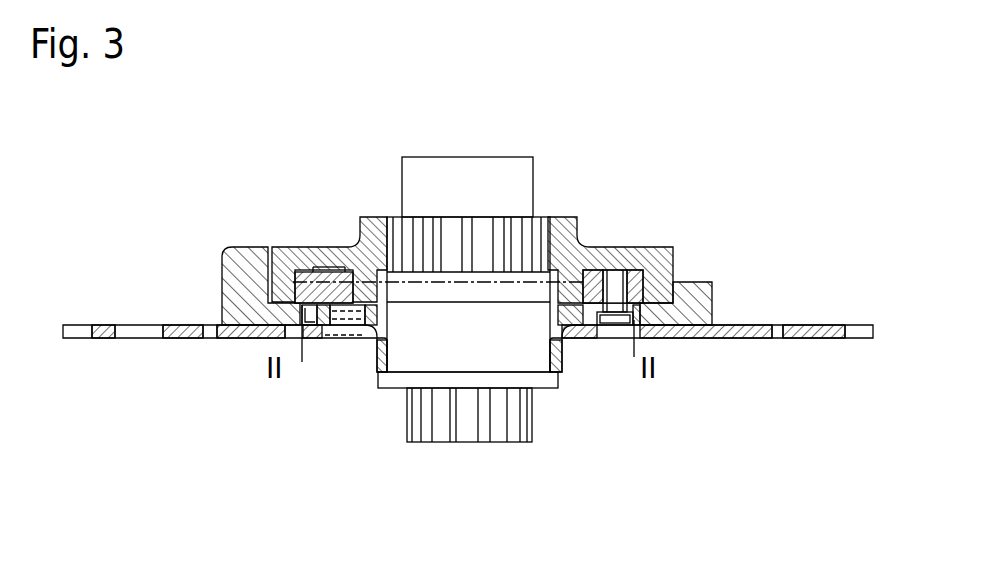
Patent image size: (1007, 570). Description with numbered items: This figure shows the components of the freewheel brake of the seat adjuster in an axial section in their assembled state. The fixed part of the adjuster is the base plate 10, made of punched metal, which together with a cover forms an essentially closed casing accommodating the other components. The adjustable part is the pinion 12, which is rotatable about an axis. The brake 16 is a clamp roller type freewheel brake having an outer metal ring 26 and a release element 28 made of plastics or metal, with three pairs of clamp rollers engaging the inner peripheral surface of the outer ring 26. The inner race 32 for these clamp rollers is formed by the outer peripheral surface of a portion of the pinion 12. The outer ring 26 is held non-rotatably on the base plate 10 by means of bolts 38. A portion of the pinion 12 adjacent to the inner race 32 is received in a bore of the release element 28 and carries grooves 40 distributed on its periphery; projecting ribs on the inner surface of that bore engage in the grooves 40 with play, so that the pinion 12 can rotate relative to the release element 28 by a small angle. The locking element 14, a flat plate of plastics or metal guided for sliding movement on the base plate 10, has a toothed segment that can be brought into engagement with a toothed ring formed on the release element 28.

The base plate 10 is at (173, 348).
The pinion 12 is at (465, 458).
The locking element 14 is at (213, 280).
The brake 16 is at (640, 221).
The outer ring 26 is at (326, 285).
The release element 28 is at (317, 238).
The inner race 32 is at (505, 283).
The bolts 38 is at (615, 320).
The grooves 40 is at (450, 226).